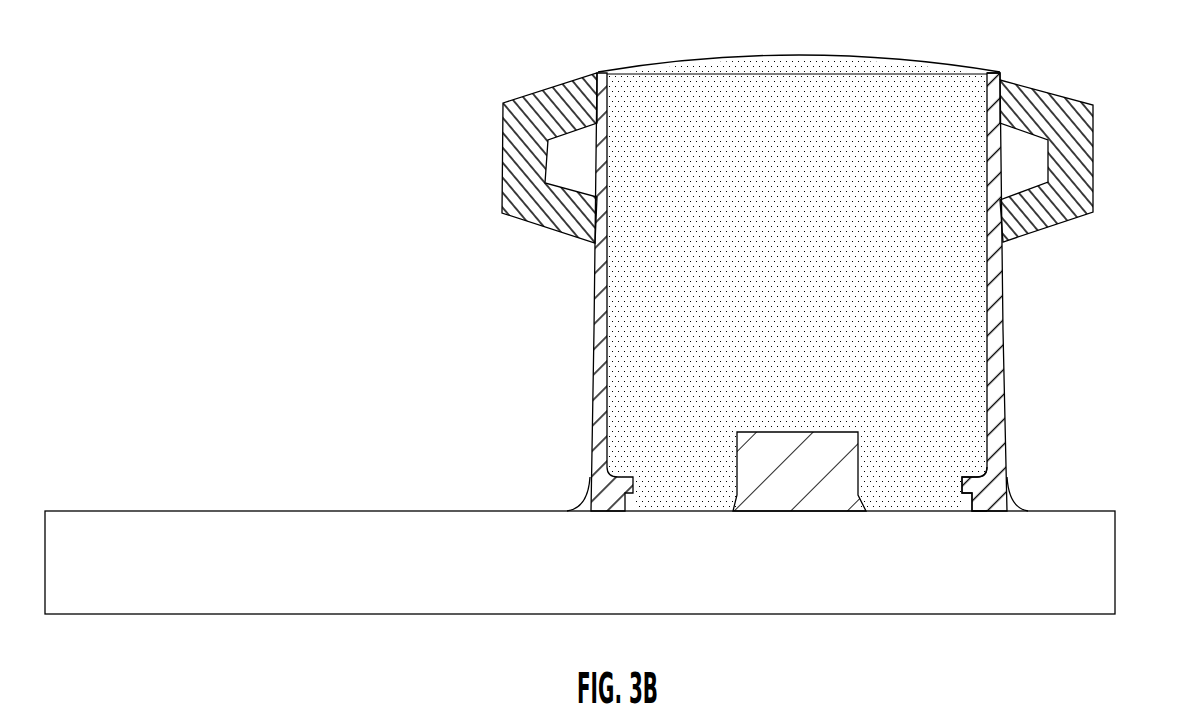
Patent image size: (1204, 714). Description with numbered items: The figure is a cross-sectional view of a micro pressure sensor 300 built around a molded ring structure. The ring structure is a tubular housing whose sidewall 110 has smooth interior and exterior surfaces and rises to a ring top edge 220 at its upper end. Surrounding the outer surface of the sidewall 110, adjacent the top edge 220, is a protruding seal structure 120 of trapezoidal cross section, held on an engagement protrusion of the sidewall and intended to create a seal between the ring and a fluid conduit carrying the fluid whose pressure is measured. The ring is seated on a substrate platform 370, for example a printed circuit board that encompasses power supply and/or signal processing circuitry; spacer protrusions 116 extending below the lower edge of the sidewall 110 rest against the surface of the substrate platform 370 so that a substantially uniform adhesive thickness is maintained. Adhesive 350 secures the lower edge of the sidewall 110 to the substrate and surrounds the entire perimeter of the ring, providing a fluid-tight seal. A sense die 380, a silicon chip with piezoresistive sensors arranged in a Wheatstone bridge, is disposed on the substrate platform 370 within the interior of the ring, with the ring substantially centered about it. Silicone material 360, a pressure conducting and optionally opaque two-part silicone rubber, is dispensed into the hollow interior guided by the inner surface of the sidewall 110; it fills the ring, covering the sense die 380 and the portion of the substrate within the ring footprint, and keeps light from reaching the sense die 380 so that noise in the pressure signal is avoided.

The sidewall 110 is at (607, 340).
The spacer protrusion 116 is at (984, 500).
The seal structure 120 is at (1045, 218).
The ring top edge 220 is at (993, 75).
The micro pressure sensor 300 is at (839, 339).
The adhesive 350 is at (573, 503).
The silicone material 360 is at (673, 66).
The substrate platform 370 is at (1097, 605).
The sense die 380 is at (838, 480).